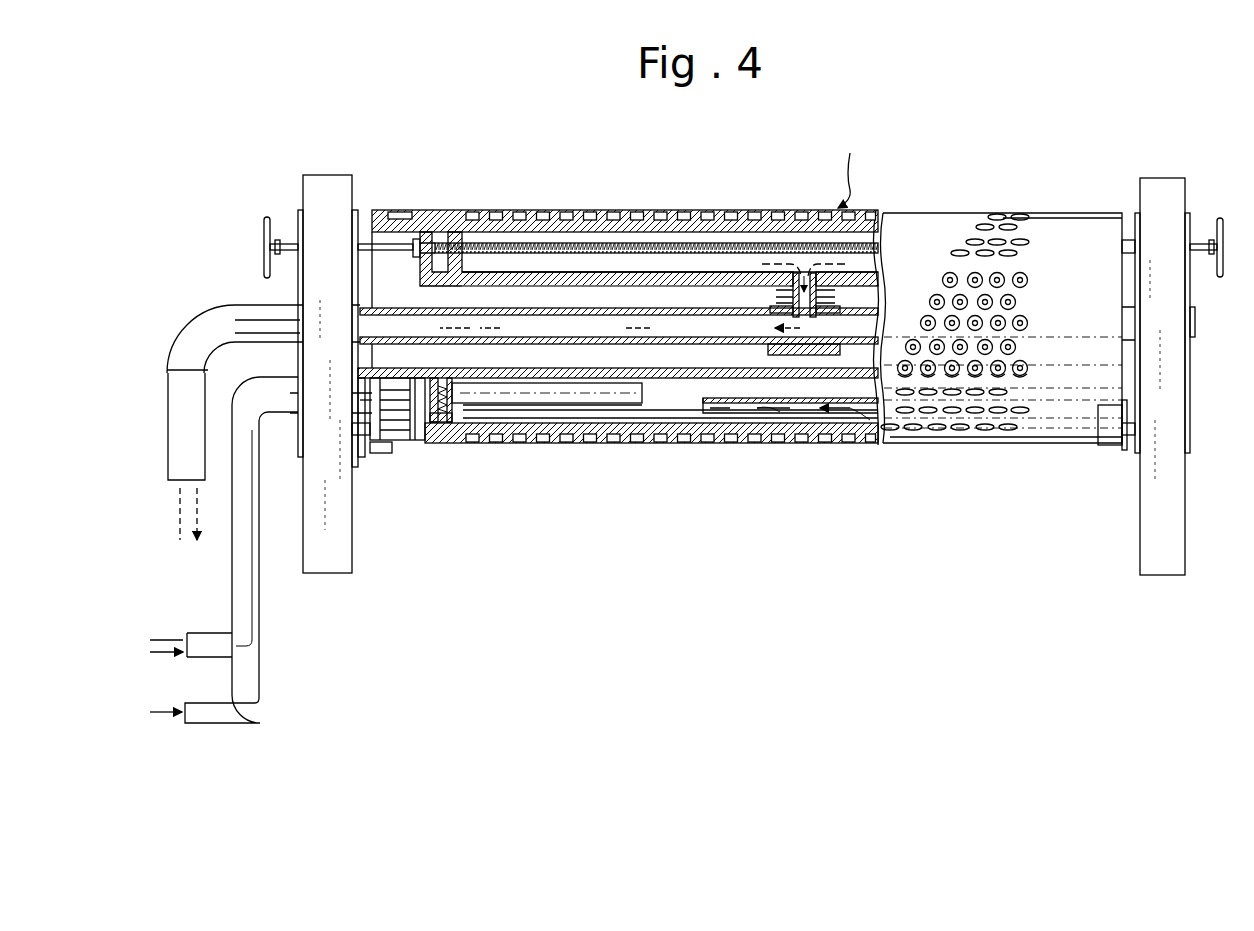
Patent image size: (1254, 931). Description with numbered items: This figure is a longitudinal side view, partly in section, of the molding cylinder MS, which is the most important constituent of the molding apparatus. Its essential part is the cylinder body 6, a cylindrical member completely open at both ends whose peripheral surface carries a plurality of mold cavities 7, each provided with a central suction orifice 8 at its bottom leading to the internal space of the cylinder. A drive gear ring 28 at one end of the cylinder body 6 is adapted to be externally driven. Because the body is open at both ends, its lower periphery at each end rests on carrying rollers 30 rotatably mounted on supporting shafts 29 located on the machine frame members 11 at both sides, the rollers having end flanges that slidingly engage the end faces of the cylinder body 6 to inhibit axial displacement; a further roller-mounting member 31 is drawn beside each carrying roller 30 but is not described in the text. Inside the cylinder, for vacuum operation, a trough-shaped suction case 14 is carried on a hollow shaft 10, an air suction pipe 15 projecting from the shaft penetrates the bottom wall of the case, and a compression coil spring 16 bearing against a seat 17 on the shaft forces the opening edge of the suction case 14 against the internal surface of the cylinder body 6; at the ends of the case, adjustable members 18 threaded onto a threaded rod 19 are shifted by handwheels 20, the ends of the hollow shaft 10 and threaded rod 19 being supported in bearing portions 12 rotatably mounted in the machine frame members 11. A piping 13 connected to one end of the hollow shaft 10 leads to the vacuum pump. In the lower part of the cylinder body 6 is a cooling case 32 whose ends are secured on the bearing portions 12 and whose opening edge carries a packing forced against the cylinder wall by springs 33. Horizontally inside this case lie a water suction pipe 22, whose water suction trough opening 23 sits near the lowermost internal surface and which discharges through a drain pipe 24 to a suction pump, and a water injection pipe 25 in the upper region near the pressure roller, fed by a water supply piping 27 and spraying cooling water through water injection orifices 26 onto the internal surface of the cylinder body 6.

The cylinder body 6 is at (628, 214).
The mold cavities 7 is at (705, 214).
The suction orifice 8 is at (570, 214).
The hollow shaft 10 is at (535, 308).
The machine frame members 11 is at (325, 555).
The bearing portions 12 is at (1190, 347).
The piping 13 is at (180, 428).
The suction case 14 is at (672, 272).
The air suction pipe 15 is at (793, 290).
The compression coil spring 16 is at (626, 297).
The seat 17 is at (840, 306).
The adjustable members 18 is at (455, 232).
The threaded rod 19 is at (605, 243).
The handwheels 20 is at (267, 215).
The water suction pipe 22 is at (288, 416).
The water suction trough opening 23 is at (770, 414).
The drain pipe 24 is at (205, 635).
The water injection pipe 25 is at (290, 392).
The water injection orifices 26 is at (608, 402).
The water supply piping 27 is at (255, 680).
The drive gear ring 28 is at (397, 211).
The supporting shafts 29 is at (360, 440).
The carrying rollers 30 is at (380, 455).
The plate 31 is at (365, 458).
The cooling case 32 is at (490, 384).
The springs 33 is at (442, 422).
The molding cylinder MS is at (850, 169).